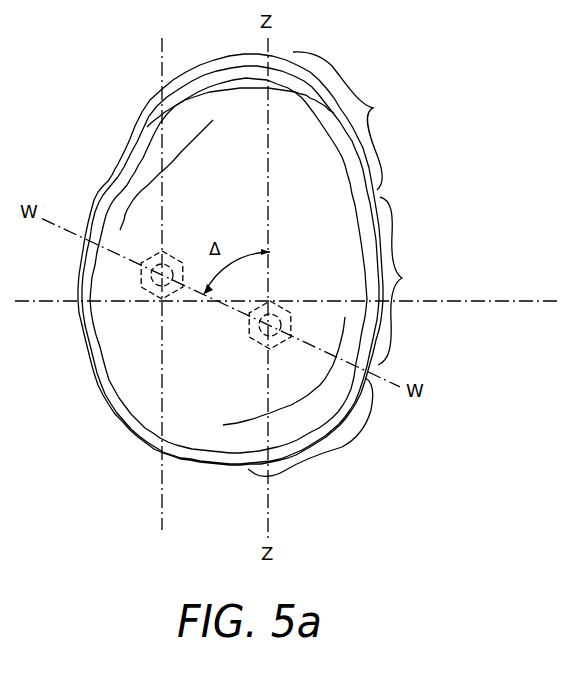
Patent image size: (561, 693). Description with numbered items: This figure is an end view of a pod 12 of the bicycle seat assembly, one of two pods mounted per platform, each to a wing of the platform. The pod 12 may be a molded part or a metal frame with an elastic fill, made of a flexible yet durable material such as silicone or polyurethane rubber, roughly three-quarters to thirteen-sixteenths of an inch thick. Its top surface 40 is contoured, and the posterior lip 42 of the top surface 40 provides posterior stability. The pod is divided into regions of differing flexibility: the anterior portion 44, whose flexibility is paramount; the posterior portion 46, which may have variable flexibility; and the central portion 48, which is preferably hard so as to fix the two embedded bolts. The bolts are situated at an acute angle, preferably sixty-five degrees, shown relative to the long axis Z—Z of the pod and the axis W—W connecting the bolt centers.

The pod 12 is at (437, 151).
The top surface 40 is at (125, 387).
The posterior lip 42 is at (197, 462).
The anterior portion 44 is at (350, 121).
The posterior portion 46 is at (310, 427).
The central portion 48 is at (406, 281).